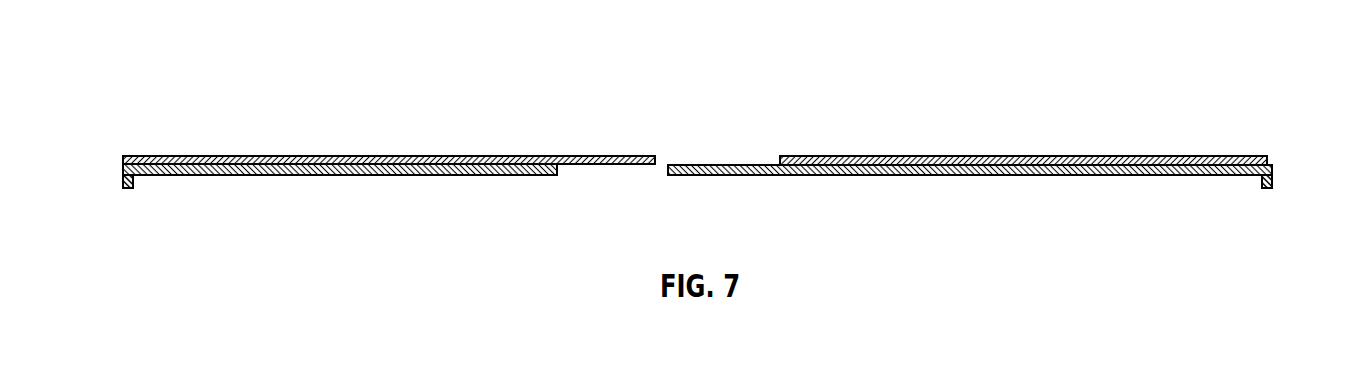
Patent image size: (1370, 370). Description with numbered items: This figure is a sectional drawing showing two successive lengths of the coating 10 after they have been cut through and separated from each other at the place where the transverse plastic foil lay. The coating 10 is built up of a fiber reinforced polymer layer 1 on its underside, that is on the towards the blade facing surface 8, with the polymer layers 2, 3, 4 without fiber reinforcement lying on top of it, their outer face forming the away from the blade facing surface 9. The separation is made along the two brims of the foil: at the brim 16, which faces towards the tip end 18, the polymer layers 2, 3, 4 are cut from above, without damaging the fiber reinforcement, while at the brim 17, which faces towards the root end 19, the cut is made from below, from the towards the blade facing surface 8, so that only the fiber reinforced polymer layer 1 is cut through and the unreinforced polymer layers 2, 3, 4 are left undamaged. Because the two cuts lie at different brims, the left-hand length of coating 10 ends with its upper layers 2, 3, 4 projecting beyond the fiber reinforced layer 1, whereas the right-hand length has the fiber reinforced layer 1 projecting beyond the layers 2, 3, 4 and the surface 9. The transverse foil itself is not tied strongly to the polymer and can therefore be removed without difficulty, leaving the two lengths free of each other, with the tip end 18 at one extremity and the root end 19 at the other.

The fiber reinforced polymer layer 1 is at (1030, 167).
The second polymer layer 2 is at (389, 127).
The third polymer layer 3 is at (389, 127).
The fourth polymer layer 4 is at (396, 160).
The towards the blade facing surface 8 is at (245, 176).
The away from the blade facing surface 9 is at (940, 157).
The coating 10 is at (275, 152).
The towards the tip end facing foil brim 16 is at (655, 156).
The towards the root end facing foil brim 17 is at (560, 176).
The tip end 18 is at (1270, 159).
The root end 19 is at (123, 157).